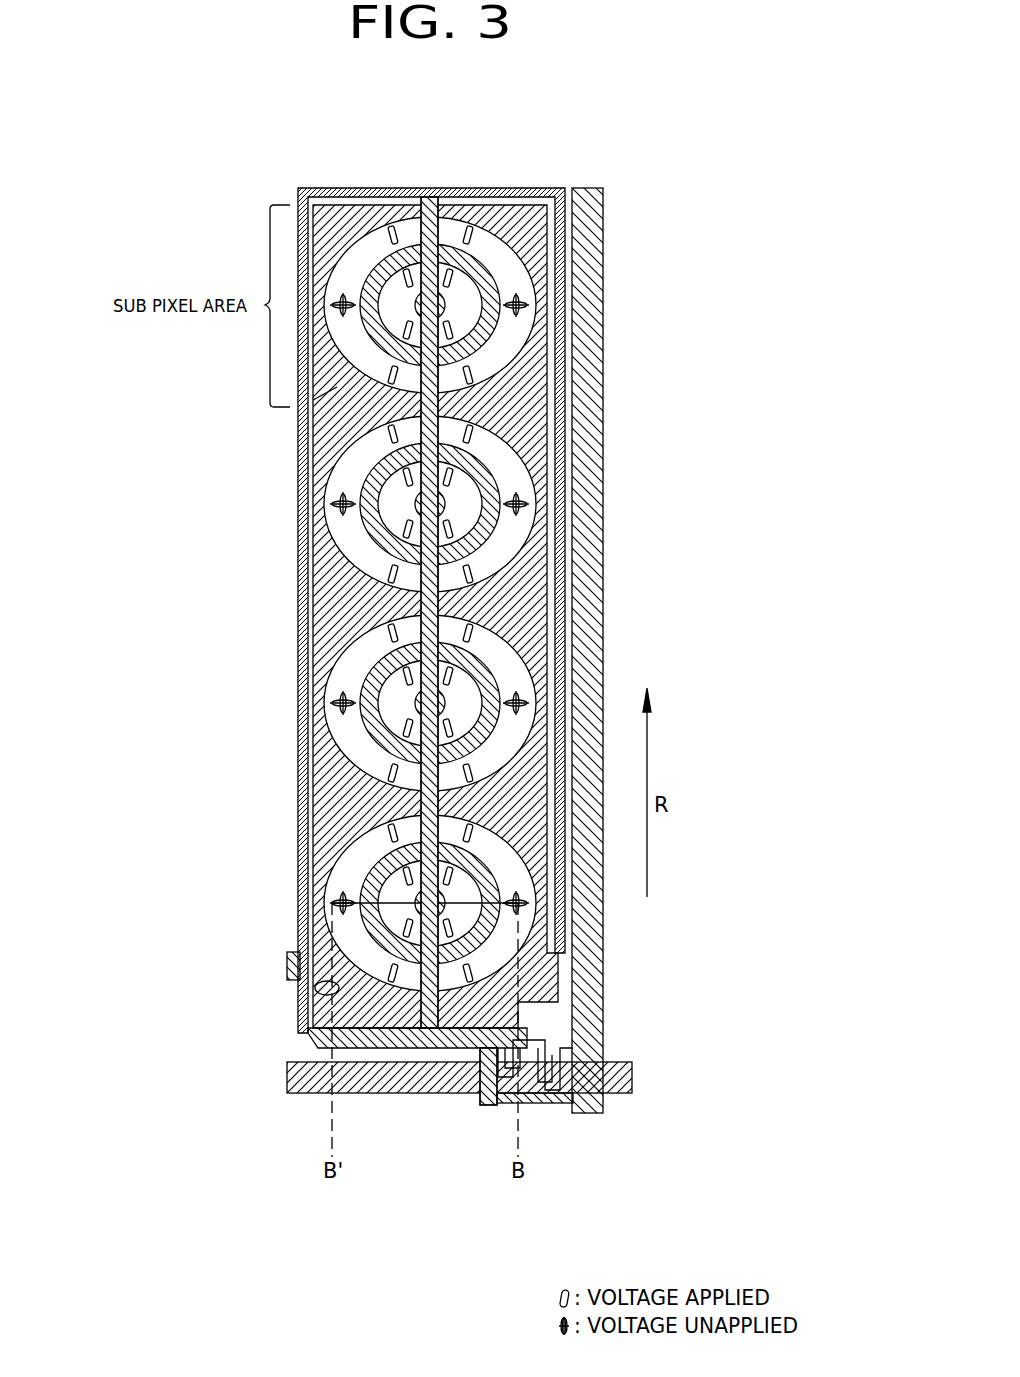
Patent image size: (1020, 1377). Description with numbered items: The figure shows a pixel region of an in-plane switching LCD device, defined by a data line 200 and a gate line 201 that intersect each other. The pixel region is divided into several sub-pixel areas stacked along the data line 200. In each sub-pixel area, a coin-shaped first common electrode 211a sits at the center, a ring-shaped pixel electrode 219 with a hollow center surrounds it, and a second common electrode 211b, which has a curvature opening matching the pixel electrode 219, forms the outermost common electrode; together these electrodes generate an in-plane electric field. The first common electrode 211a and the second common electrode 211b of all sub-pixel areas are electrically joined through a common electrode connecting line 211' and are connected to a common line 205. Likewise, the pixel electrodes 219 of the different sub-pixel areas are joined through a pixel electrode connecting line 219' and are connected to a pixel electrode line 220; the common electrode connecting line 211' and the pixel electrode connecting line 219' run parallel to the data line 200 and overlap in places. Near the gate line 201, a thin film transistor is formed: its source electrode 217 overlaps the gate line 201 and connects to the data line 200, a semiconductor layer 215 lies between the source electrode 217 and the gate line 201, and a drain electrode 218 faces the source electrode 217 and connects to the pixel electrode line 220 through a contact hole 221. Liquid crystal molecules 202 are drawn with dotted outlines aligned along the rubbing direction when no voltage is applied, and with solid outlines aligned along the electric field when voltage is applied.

The data line 200 is at (588, 194).
The gate line 201 is at (287, 1075).
The liquid crystal molecules 202 is at (463, 632).
The common line 205 is at (575, 445).
The first common electrode 211a is at (415, 306).
The second common electrode 211b is at (335, 390).
The common electrode connecting line 211' is at (583, 612).
The semiconductor layer 215 is at (558, 1103).
The source electrode 217 is at (548, 1052).
The drain electrode 218 is at (440, 1037).
The pixel electrode 219 is at (341, 504).
The pixel electrode connecting line 219' is at (552, 297).
The pixel electrode line 220 is at (548, 520).
The contact hole 221 is at (315, 988).